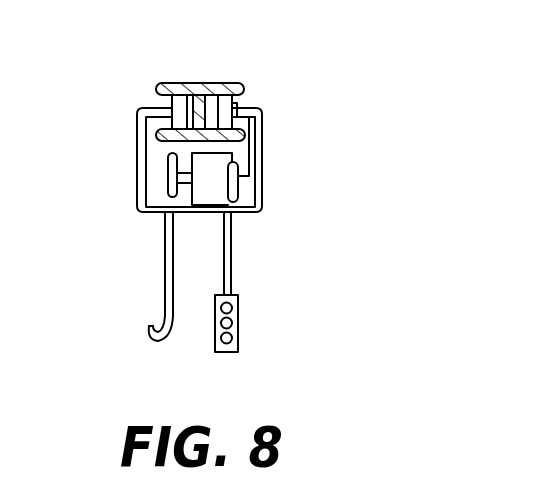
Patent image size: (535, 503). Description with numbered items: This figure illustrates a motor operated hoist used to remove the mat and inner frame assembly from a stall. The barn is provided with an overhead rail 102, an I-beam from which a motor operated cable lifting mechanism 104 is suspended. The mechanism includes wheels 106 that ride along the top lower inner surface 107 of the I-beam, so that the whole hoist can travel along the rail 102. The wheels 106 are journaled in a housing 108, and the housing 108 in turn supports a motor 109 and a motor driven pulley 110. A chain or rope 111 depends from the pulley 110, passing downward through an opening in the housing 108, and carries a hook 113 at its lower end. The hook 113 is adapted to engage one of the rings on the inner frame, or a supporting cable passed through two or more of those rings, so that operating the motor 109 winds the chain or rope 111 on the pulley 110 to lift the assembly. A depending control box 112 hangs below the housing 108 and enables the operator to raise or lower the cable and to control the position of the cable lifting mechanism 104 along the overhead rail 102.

The overhead rail 102 is at (190, 83).
The motor operated cable lifting mechanism 104 is at (214, 174).
The wheels 106 is at (228, 105).
The top lower inner surface 107 is at (138, 131).
The housing 108 is at (261, 172).
The motor 109 is at (240, 206).
The motor driven pulley 110 is at (168, 175).
The chain or rope 111 is at (165, 283).
The control box 112 is at (238, 313).
The hook 113 is at (163, 338).